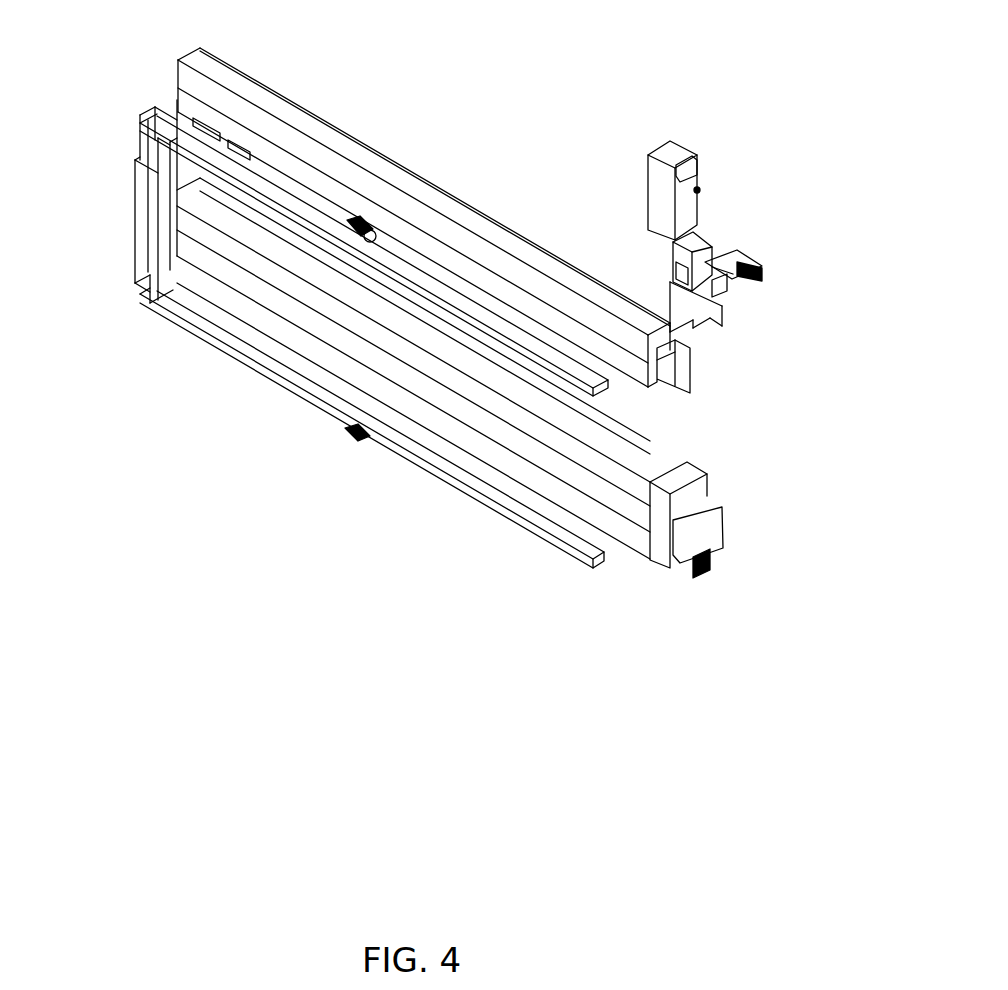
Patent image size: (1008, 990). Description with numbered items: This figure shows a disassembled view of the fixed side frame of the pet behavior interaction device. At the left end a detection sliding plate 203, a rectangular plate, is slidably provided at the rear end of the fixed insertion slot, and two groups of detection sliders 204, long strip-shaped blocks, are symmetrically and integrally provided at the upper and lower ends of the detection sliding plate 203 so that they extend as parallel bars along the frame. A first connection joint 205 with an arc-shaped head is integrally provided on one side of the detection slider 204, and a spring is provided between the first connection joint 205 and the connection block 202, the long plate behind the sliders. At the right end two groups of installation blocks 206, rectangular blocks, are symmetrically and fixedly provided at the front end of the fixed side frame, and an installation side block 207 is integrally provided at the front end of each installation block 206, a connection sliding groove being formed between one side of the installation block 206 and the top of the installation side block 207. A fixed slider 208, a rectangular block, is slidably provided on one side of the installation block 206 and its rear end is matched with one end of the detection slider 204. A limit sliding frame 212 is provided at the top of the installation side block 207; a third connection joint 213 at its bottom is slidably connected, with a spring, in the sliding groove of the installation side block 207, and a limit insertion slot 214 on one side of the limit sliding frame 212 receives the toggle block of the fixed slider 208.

The connection block 202 is at (268, 102).
The detection sliding plate 203 is at (160, 215).
The detection slider 204 is at (165, 120).
The first connection joint 205 is at (378, 230).
The installation block 206 is at (693, 248).
The installation side block 207 is at (695, 298).
The fixed slider 208 is at (657, 177).
The limit sliding frame 212 is at (740, 258).
The third connection joint 213 is at (728, 292).
The limit insertion slot 214 is at (762, 275).